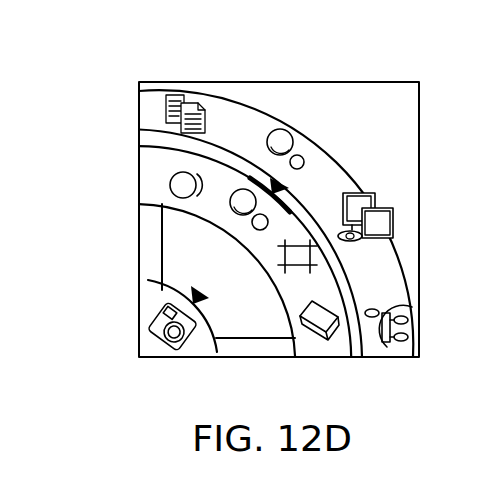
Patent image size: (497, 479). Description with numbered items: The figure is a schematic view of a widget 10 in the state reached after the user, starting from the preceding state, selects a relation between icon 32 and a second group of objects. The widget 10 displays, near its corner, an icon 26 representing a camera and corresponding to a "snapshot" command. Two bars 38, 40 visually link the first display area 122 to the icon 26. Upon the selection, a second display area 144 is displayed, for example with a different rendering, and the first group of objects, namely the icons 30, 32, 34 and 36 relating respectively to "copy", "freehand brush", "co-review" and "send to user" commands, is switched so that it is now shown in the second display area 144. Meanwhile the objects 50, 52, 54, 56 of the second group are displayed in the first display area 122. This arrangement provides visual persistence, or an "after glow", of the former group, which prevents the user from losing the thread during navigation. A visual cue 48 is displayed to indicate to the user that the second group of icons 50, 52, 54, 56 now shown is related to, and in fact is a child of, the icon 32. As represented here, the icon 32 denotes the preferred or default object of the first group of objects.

The widget 10 is at (146, 52).
The second display area 144 is at (229, 118).
The icon 32 is at (282, 129).
The icon 30 is at (166, 112).
The first display area 122 is at (150, 159).
The visual cue 48 is at (286, 183).
The icon 34 is at (368, 192).
The object 50 is at (168, 186).
The bar 38 is at (162, 224).
The object 52 is at (241, 222).
The object 54 is at (282, 266).
The icon 26 is at (146, 337).
The bar 40 is at (249, 338).
The object 56 is at (317, 333).
The icon 36 is at (388, 342).